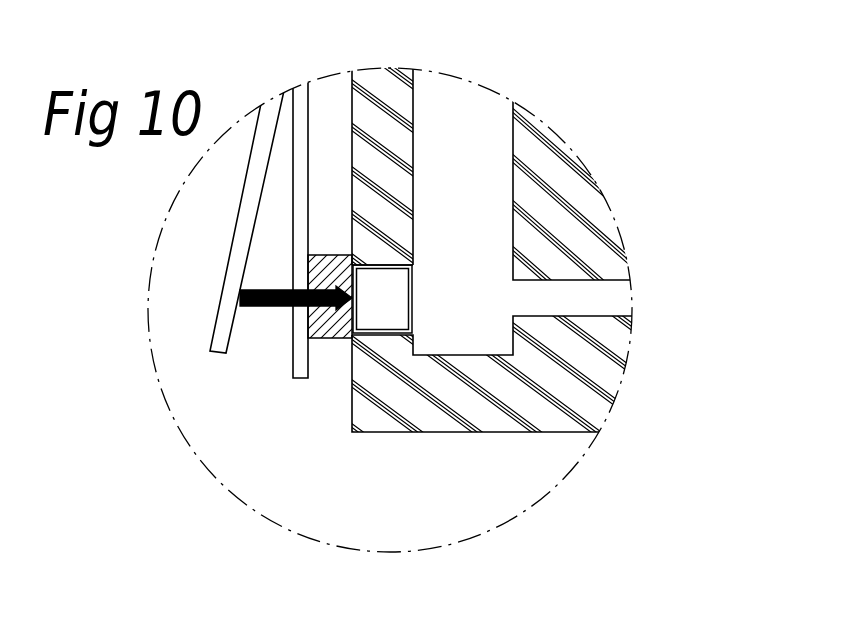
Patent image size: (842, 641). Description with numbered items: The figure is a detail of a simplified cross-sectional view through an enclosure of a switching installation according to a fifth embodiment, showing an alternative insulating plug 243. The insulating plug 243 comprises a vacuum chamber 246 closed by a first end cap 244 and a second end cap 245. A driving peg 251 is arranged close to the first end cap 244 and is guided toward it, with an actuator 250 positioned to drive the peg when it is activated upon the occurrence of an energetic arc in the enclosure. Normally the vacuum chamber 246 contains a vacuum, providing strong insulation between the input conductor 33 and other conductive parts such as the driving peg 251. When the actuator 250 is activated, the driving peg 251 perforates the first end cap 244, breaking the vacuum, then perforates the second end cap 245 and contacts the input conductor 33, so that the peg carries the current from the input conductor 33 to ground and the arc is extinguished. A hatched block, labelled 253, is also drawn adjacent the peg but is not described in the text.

The input conductor 33 is at (464, 130).
The insulating plug 243 is at (417, 290).
The first end cap 244 is at (325, 340).
The second end cap 245 is at (383, 297).
The vacuum chamber 246 is at (412, 303).
The actuator 250 is at (241, 236).
The driving peg 251 is at (262, 306).
The seal block 253 is at (322, 273).